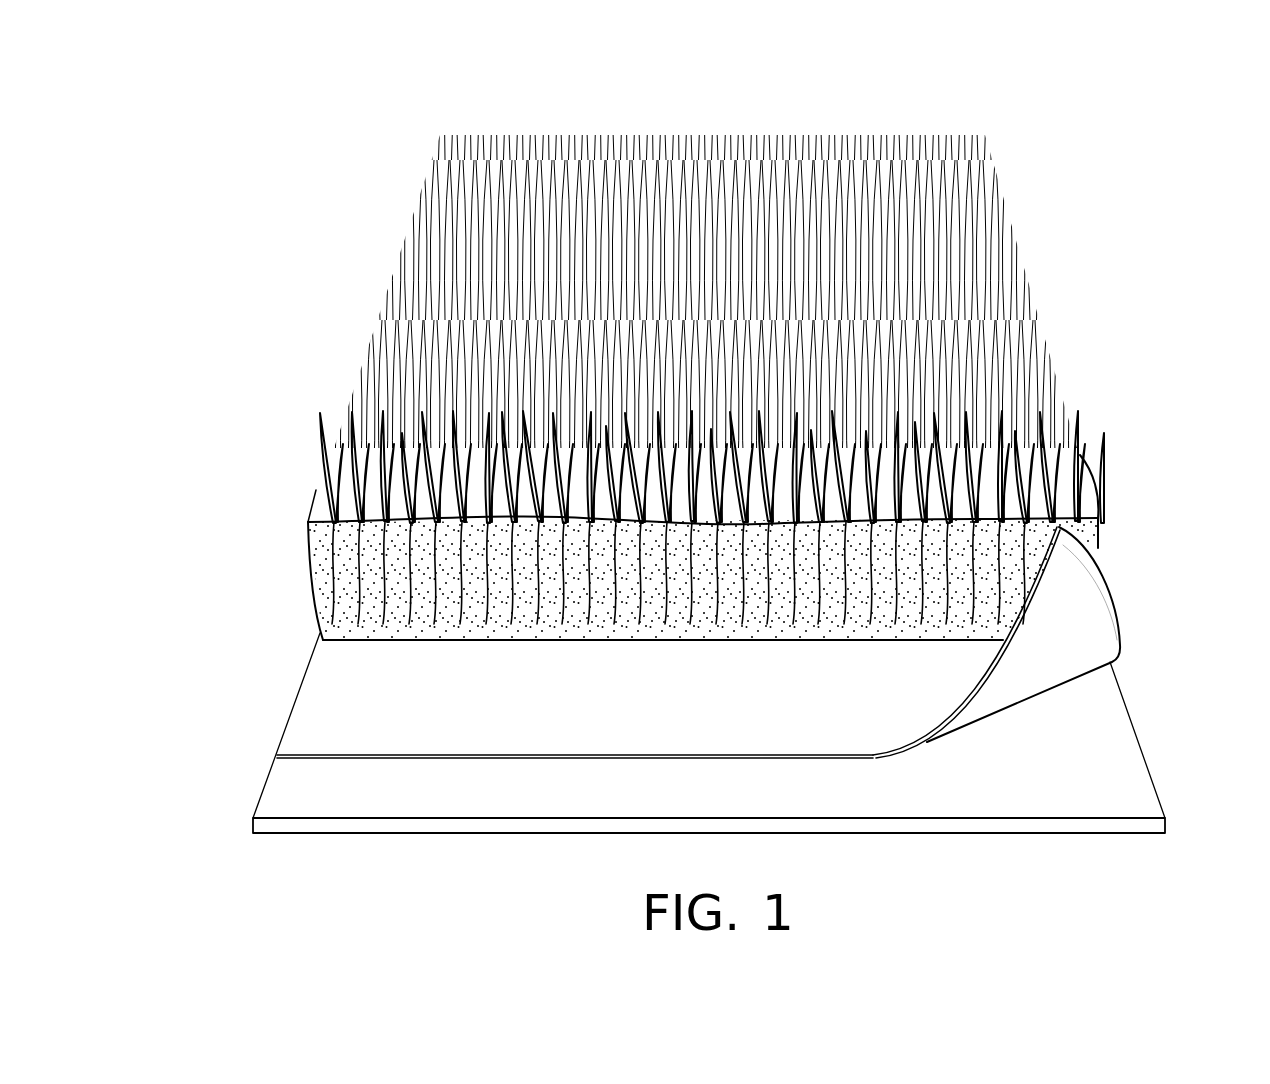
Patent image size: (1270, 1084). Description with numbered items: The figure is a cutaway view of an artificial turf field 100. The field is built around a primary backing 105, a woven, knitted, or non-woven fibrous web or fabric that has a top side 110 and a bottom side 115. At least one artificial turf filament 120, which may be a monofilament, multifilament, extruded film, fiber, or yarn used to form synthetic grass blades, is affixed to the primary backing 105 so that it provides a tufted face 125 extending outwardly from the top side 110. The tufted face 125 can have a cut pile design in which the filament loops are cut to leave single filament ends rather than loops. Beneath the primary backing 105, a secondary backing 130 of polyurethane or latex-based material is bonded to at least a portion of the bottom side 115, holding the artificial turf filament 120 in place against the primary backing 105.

The artificial turf field 100 is at (258, 138).
The primary backing 105 is at (1098, 596).
The top side 110 is at (322, 699).
The bottom side 115 is at (1110, 625).
The artificial turf filament 120 is at (1105, 398).
The tufted face 125 is at (1076, 291).
The secondary backing 130 is at (281, 783).